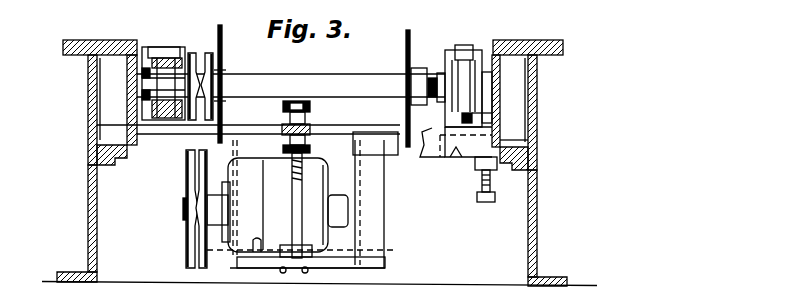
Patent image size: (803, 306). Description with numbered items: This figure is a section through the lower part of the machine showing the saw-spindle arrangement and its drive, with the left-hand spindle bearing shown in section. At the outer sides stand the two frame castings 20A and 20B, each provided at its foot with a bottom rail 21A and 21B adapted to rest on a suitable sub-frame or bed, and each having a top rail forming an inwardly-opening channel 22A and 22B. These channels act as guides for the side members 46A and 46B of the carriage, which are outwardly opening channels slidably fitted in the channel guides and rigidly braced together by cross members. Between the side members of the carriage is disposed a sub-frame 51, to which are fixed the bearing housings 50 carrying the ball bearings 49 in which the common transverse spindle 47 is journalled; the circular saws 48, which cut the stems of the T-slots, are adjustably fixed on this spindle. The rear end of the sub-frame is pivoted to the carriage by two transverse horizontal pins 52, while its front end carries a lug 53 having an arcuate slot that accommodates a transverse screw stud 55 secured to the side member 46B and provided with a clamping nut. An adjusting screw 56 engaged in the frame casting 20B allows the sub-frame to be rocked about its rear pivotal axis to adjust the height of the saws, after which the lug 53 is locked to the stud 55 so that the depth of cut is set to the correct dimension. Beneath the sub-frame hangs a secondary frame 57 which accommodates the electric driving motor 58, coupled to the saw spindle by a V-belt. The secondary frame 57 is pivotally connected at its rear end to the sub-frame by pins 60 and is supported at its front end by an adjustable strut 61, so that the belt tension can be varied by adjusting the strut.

The frame casting 20A is at (97, 224).
The frame casting 20B is at (528, 237).
The bottom rail 21A is at (70, 272).
The bottom rail 21B is at (557, 267).
The inwardly-opening channel 22A is at (100, 94).
The inwardly-opening channel 22B is at (534, 109).
The side member 46A is at (97, 126).
The side member 46B is at (537, 140).
The transverse spindle 47 is at (307, 74).
The circular saws 48 is at (223, 48).
The ball bearings 49 is at (178, 47).
The bearing housings 50 is at (188, 53).
The sub-frame 51 is at (184, 150).
The transverse horizontal pins 52 is at (145, 157).
The lug 53 is at (490, 113).
The transverse screw stud 55 is at (462, 118).
The adjusting screw 56 is at (480, 200).
The secondary frame 57 is at (372, 268).
The electric driving motor 58 is at (320, 178).
The pins 60 is at (448, 50).
The adjustable strut 61 is at (293, 206).